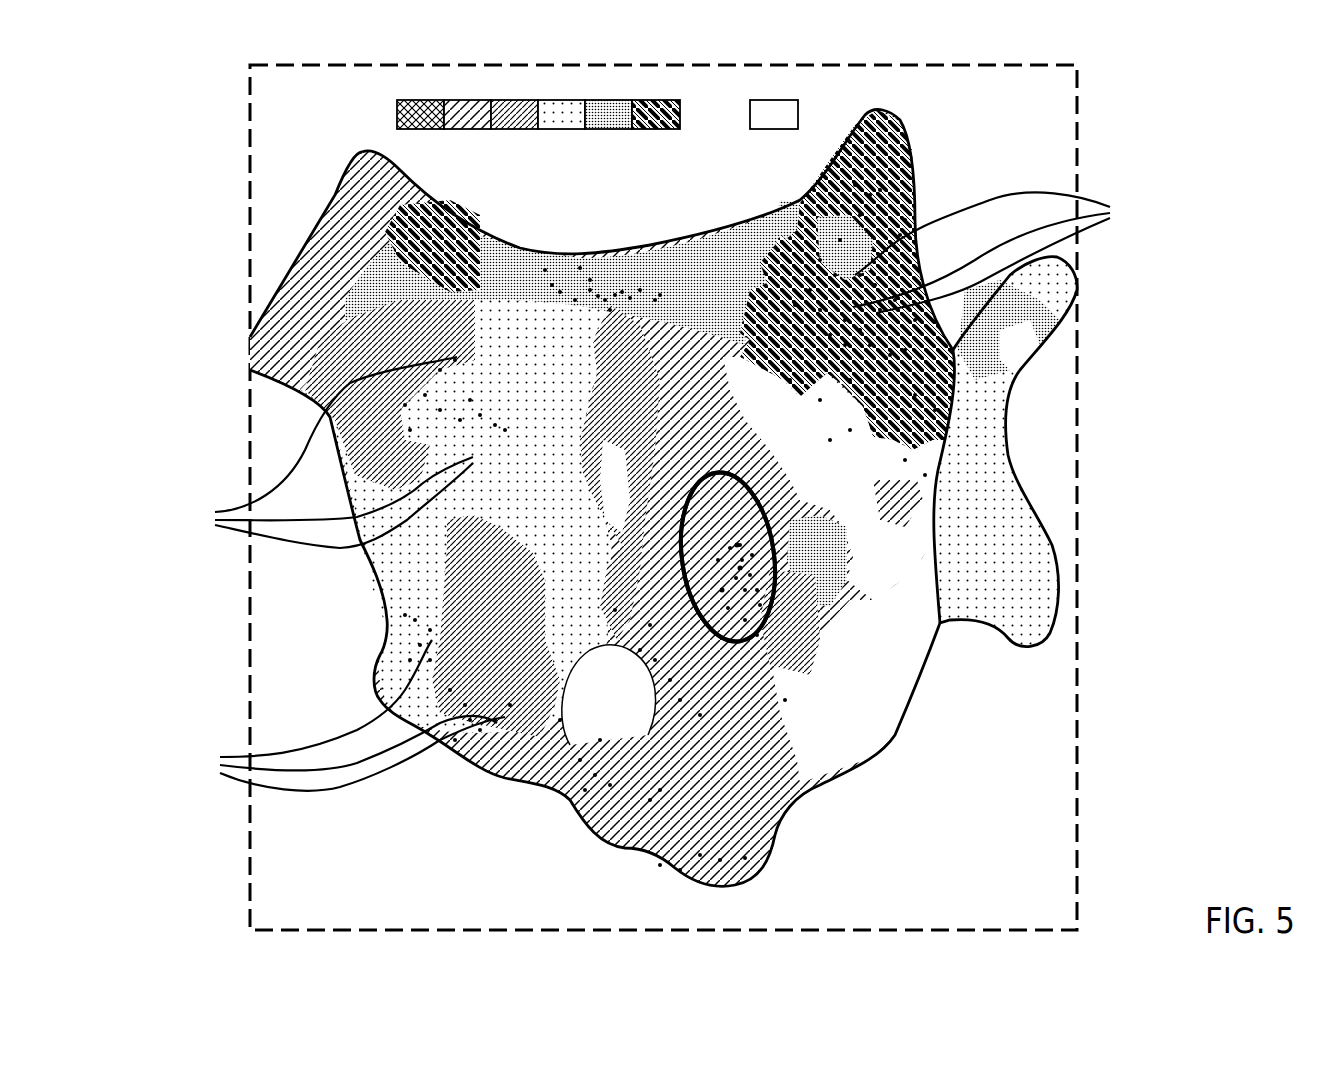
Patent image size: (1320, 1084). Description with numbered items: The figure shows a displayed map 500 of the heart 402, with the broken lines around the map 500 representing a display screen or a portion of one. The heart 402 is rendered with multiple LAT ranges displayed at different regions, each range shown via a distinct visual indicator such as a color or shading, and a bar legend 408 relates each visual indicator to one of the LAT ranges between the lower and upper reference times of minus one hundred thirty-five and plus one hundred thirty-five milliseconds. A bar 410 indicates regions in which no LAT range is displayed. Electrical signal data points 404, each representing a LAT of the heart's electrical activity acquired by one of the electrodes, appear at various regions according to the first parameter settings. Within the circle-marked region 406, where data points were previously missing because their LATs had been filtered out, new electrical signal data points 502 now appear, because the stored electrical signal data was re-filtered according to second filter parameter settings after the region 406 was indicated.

The map 500 is at (146, 150).
The heart 402 is at (283, 250).
The electrical signal data points 404 is at (664, 491).
The region 406 is at (743, 537).
The bar legend 408 is at (577, 142).
The bar 410 is at (775, 129).
The new electrical signal data points 502 is at (737, 545).